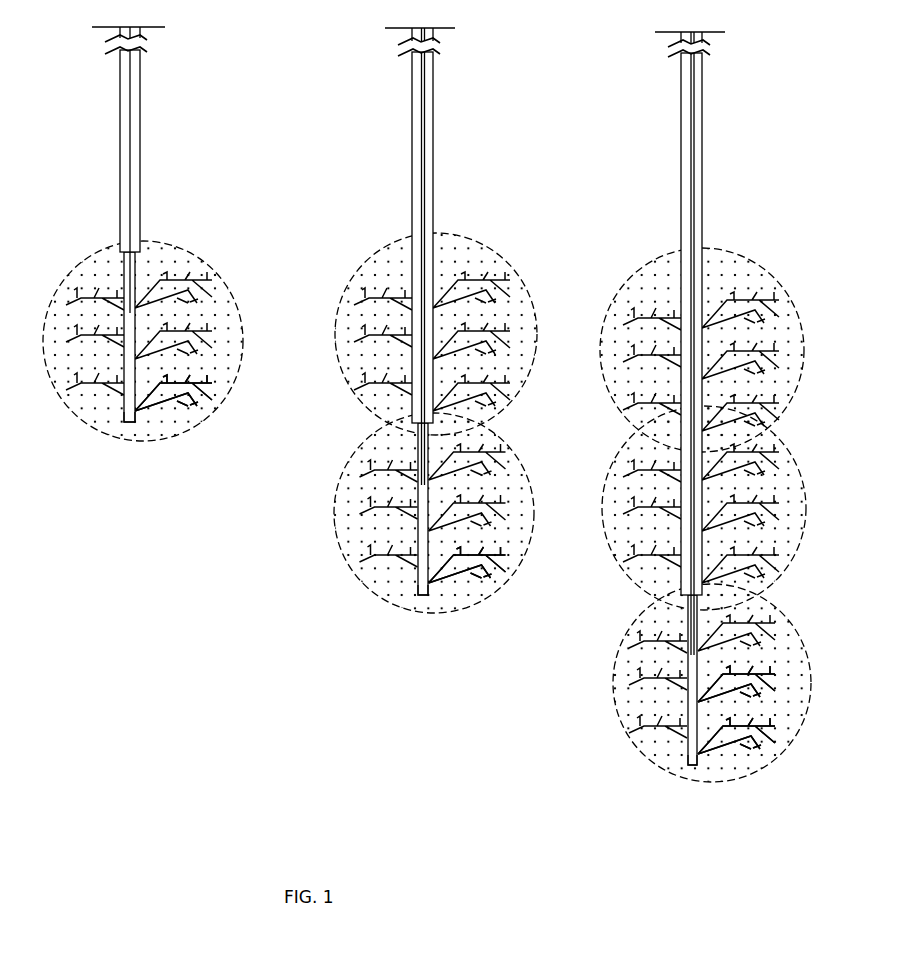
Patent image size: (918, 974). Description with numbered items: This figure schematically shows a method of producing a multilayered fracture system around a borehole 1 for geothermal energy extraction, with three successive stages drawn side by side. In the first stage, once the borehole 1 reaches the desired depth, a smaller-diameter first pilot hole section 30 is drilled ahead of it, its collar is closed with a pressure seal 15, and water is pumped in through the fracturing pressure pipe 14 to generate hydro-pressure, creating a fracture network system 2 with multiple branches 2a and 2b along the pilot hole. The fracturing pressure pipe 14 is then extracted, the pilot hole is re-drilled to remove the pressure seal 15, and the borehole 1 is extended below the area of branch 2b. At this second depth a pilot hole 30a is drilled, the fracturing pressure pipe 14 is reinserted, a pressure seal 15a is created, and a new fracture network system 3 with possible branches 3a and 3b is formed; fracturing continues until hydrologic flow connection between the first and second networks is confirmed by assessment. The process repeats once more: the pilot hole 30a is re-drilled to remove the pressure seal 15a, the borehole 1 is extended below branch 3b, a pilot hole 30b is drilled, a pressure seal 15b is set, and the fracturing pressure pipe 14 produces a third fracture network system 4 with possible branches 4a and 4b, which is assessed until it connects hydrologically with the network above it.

The borehole 1 is at (140, 100).
The fracturing pressure pipe 14 is at (423, 168).
The pressure seal 15 is at (127, 268).
The pressure seal 15a is at (423, 467).
The pressure seal 15b is at (690, 618).
The fracture network system 2 is at (197, 277).
The fracture network branch 2a is at (164, 341).
The fracture network branch 2b is at (203, 397).
The fracture network system 3 is at (512, 393).
The fracture network branch 3a is at (478, 468).
The fracture network branch 3b is at (495, 563).
The fracture network system 4 is at (736, 683).
The fracture network branch 4a is at (757, 676).
The fracture network branch 4b is at (763, 733).
The first pilot hole section 30 is at (128, 422).
The pilot hole 30a is at (423, 582).
The pilot hole 30b is at (692, 753).